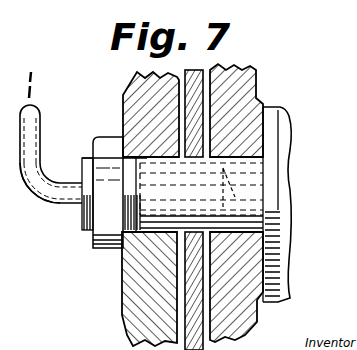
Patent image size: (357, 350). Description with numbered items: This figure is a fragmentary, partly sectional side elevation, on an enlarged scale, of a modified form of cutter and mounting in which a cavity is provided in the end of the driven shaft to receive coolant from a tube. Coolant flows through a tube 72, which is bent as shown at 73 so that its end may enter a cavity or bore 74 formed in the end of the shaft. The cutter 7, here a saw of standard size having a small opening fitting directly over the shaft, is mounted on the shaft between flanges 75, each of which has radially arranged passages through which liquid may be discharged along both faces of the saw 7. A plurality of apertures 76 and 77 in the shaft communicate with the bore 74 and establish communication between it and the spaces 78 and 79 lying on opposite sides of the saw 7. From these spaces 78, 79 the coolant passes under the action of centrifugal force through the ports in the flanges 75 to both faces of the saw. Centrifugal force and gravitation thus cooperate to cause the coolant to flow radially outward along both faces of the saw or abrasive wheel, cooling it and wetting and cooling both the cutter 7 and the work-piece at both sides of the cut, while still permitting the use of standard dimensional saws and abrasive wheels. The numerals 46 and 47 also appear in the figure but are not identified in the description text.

The cutter 7 is at (212, 64).
The nut 46 is at (100, 250).
The sleeve 47 is at (83, 232).
The tube 72 is at (38, 145).
The bend 73 is at (42, 199).
The cavity or bore 74 is at (127, 237).
The flanges 75 is at (140, 318).
The aperture 76 is at (199, 195).
The aperture 77 is at (270, 202).
The space 78 is at (130, 92).
The space 79 is at (237, 92).